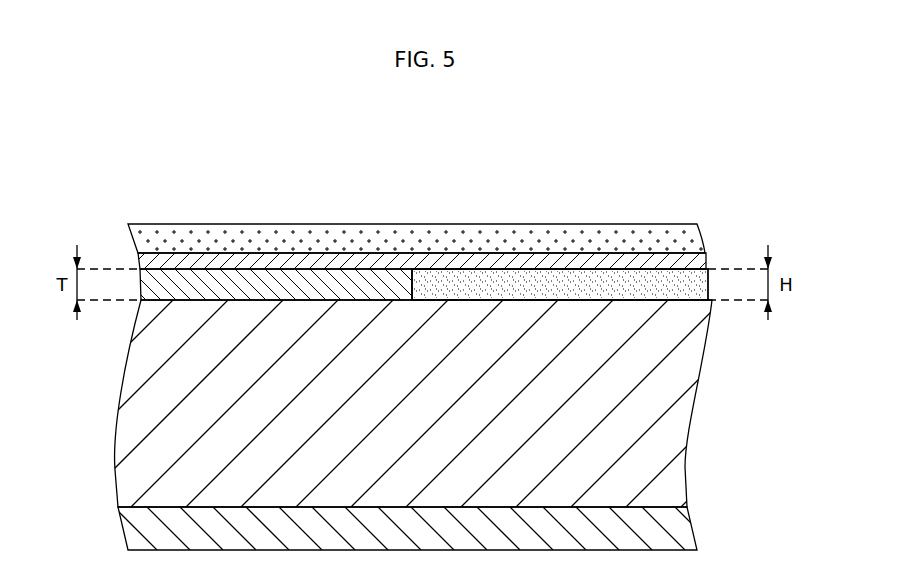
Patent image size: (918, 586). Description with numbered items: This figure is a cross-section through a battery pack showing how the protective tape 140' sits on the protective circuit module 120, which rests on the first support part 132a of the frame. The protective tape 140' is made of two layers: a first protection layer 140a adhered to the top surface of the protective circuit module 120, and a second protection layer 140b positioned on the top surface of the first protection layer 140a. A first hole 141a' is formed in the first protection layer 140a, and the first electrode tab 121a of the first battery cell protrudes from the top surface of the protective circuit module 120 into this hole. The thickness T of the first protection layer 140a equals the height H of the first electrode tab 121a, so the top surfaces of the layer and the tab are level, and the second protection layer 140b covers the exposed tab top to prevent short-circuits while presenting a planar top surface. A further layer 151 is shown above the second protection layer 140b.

The adhesive layer 151 is at (183, 238).
The protective tape 140' is at (415, 206).
The second protection layer 140b is at (262, 262).
The first protection layer 140a is at (352, 278).
The first hole 141a' is at (560, 233).
The first electrode tab 121a is at (535, 282).
The protective circuit module 120 is at (672, 422).
The first support part 132a is at (672, 527).